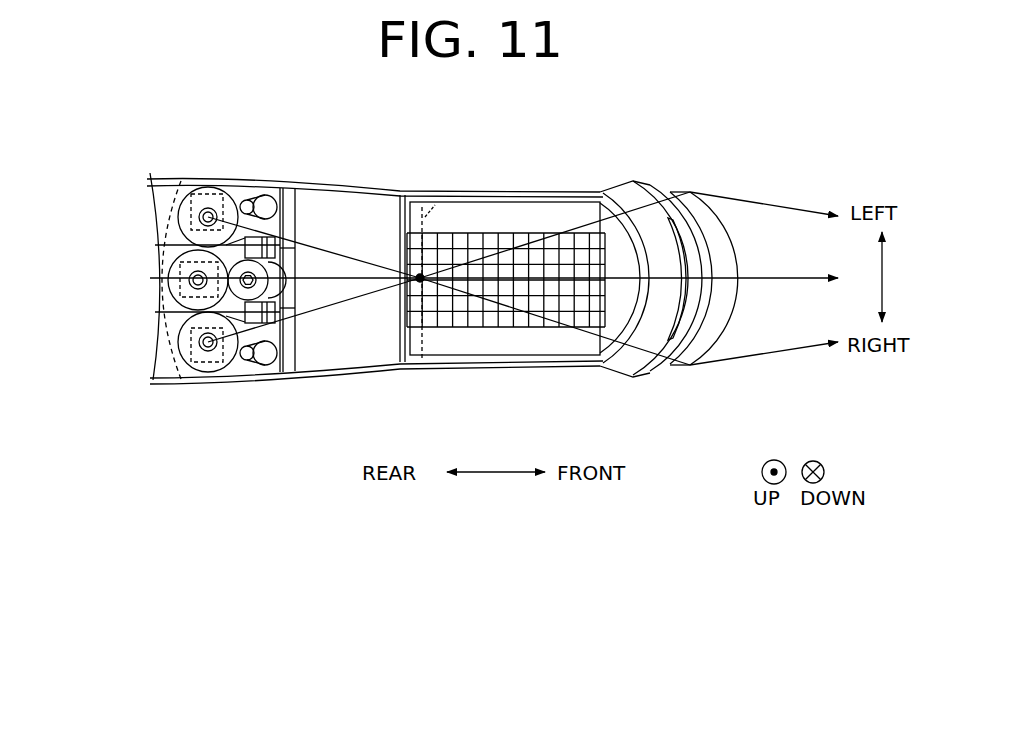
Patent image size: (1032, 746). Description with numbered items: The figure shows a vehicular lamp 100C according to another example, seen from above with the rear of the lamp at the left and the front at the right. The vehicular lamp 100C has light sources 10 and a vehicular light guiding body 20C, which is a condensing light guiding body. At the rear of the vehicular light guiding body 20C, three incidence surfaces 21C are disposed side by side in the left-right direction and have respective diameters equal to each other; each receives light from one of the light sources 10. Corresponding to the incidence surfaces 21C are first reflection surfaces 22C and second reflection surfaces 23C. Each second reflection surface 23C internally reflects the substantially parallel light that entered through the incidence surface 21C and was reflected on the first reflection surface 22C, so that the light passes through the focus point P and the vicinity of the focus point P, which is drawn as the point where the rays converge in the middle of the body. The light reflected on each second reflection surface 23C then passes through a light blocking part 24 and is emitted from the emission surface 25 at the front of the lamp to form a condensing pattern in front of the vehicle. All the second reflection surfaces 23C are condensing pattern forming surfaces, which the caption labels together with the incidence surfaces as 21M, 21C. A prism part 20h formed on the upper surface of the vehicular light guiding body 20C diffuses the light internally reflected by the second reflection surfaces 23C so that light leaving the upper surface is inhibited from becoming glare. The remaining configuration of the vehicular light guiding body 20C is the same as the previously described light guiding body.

The vehicular lamp 100C is at (709, 149).
The light source 10 is at (191, 174).
The motor 21M is at (214, 196).
The incidence surface 21C is at (203, 279).
The first reflection surface 22C is at (243, 197).
The second reflection surface 23C is at (175, 203).
The light blocking part 24 is at (433, 193).
The emission surface 25 is at (727, 237).
The vehicular light guiding body 20C is at (327, 383).
The prism part 20h is at (489, 328).
The focus point P is at (410, 287).